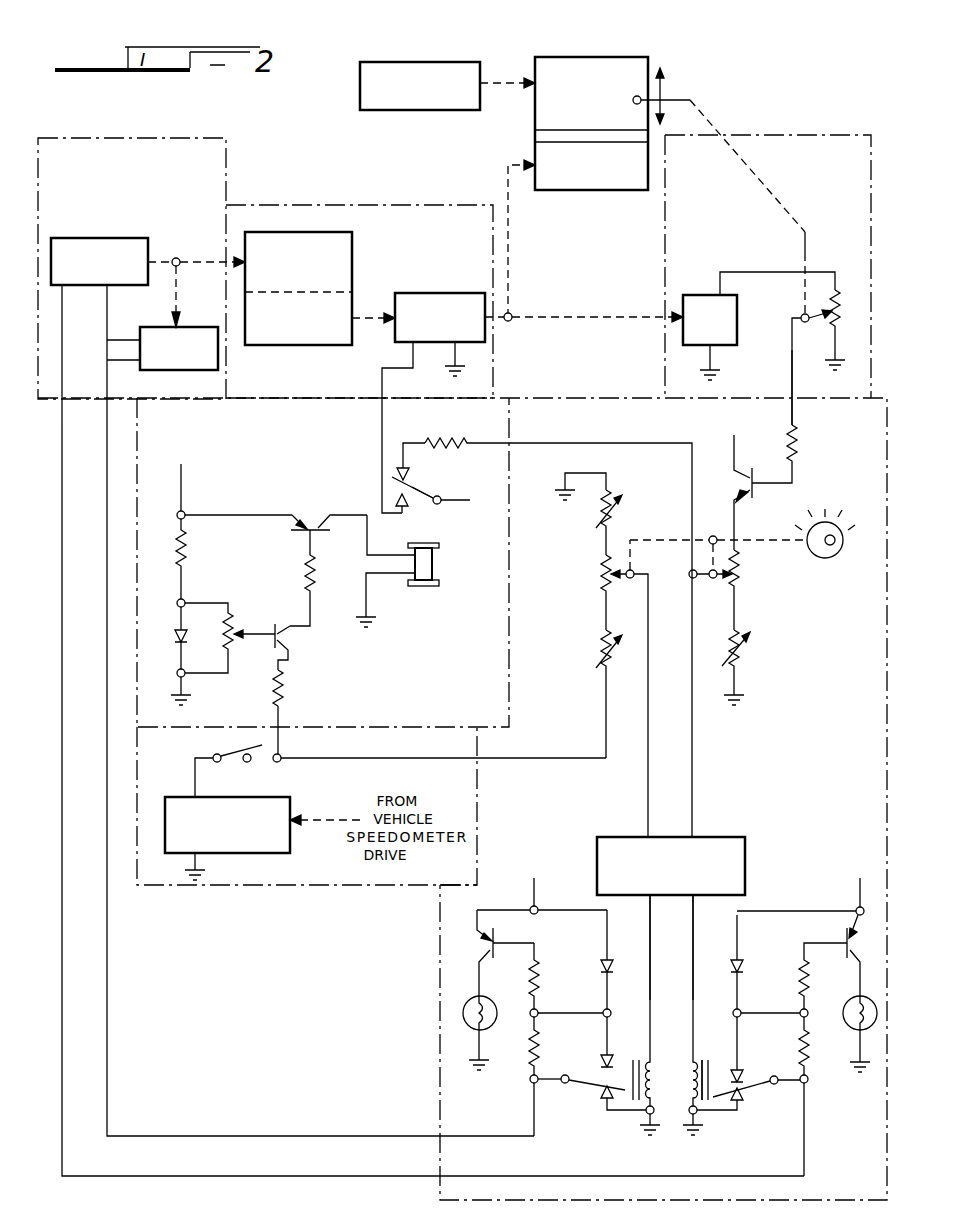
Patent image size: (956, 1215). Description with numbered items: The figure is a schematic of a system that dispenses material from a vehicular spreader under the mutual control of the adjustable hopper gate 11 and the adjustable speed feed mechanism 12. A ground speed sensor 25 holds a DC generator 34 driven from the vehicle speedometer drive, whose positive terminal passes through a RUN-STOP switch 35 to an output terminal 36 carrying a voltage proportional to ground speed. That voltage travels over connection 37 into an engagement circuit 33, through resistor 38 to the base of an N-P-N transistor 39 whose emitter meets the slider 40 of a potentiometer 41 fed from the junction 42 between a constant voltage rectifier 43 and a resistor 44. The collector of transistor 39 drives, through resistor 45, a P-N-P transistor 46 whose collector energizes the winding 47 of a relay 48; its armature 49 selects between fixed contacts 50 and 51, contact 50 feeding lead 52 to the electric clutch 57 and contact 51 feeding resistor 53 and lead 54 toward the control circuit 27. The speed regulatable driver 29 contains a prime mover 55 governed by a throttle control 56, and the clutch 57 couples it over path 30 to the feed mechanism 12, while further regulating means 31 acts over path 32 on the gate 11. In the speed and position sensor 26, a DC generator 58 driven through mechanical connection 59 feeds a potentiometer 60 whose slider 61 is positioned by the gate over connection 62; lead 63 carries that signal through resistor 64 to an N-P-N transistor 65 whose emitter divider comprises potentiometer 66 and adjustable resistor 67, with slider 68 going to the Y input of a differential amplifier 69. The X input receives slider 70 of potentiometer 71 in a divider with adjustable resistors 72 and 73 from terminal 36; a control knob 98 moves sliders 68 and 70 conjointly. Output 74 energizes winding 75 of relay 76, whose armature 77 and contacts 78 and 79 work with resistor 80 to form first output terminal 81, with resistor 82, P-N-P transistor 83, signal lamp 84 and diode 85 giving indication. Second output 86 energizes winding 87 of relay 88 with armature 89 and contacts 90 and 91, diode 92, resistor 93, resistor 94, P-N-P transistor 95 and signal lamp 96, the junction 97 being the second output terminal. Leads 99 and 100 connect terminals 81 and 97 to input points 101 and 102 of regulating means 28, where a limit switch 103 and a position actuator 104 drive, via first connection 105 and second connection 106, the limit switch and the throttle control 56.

The adjustable gate 11 is at (580, 57).
The adjustable speed feed mechanism 12 is at (535, 152).
The ground speed sensor 25 is at (245, 888).
The speed and position sensor 26 is at (800, 133).
The control circuit 27 is at (440, 1000).
The regulating means 28 is at (128, 138).
The speed regulatable driver 29 is at (365, 205).
The path 30 is at (512, 252).
The regulating means 31 is at (360, 86).
The path 32 is at (497, 78).
The engagement circuit 33 is at (137, 475).
The DC generator 34 is at (172, 797).
The RUN-STOP switch 35 is at (225, 752).
The output terminal 36 is at (283, 757).
The connection 37 is at (283, 718).
The resistor 38 is at (283, 692).
The N-P-N transistor 39 is at (279, 628).
The slider 40 is at (250, 640).
The potentiometer 41 is at (233, 618).
The junction 42 is at (186, 600).
The constant voltage rectifier 43 is at (175, 637).
The resistor 44 is at (178, 540).
The resistor 45 is at (305, 582).
The P-N-P transistor 46 is at (305, 523).
The winding 47 is at (436, 566).
The relay 48 is at (445, 518).
The armature 49 is at (425, 490).
The fixed contact 50 is at (408, 506).
The fixed contact 51 is at (410, 474).
The lead 52 is at (382, 452).
The resistor 53 is at (449, 438).
The lead 54 is at (540, 445).
The prime mover 55 is at (315, 345).
The throttle control 56 is at (355, 240).
The electric clutch 57 is at (425, 293).
The DC generator 58 is at (700, 295).
The mechanical connection 59 is at (578, 312).
The potentiometer 60 is at (840, 300).
The slider 61 is at (806, 330).
The connection 62 is at (775, 192).
The lead 63 is at (792, 380).
The resistor 64 is at (800, 448).
The N-P-N transistor 65 is at (731, 472).
The potentiometer 66 is at (742, 568).
The adjustable resistor 67 is at (745, 652).
The slider 68 is at (720, 580).
The differential amplifier 69 is at (732, 837).
The slider 70 is at (632, 580).
The potentiometer 71 is at (604, 578).
The adjustable resistor 72 is at (604, 510).
The adjustable resistor 73 is at (604, 650).
The output 74 is at (694, 952).
The winding 75 is at (692, 1055).
The relay 76 is at (710, 1060).
The armature 77 is at (753, 1090).
The fixed contact 78 is at (742, 1076).
The fixed contact 79 is at (740, 1105).
The resistor 80 is at (812, 1058).
The first output terminal 81 is at (810, 1080).
The resistor 82 is at (810, 990).
The P-N-P transistor 83 is at (865, 935).
The signal lamp 84 is at (842, 1017).
The diode 85 is at (745, 966).
The second output 86 is at (654, 950).
The winding 87 is at (665, 1088).
The relay 88 is at (593, 1053).
The armature 89 is at (582, 1086).
The fixed contact 90 is at (600, 1068).
The fixed contact 91 is at (605, 1102).
The diode 92 is at (603, 957).
The resistor 93 is at (541, 1057).
The resistor 94 is at (542, 985).
The P-N-P transistor 95 is at (474, 940).
The signal lamp 96 is at (465, 1010).
The junction 97 is at (530, 1081).
The control knob 98 is at (842, 556).
The lead 99 is at (272, 1176).
The lead 100 is at (215, 1136).
The input point 101 is at (60, 395).
The input point 102 is at (105, 392).
The limit switch 103 is at (160, 372).
The position actuator 104 is at (90, 238).
The first connection 105 is at (176, 310).
The second connection 106 is at (181, 257).